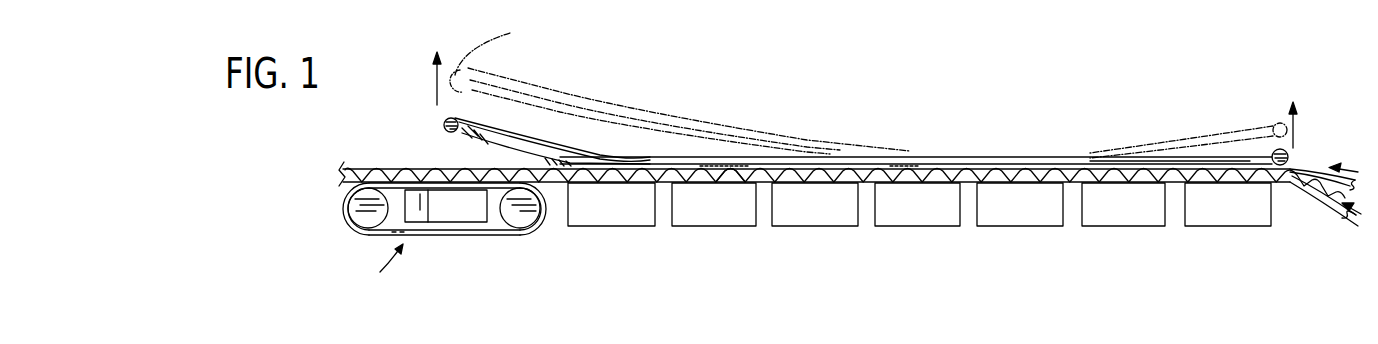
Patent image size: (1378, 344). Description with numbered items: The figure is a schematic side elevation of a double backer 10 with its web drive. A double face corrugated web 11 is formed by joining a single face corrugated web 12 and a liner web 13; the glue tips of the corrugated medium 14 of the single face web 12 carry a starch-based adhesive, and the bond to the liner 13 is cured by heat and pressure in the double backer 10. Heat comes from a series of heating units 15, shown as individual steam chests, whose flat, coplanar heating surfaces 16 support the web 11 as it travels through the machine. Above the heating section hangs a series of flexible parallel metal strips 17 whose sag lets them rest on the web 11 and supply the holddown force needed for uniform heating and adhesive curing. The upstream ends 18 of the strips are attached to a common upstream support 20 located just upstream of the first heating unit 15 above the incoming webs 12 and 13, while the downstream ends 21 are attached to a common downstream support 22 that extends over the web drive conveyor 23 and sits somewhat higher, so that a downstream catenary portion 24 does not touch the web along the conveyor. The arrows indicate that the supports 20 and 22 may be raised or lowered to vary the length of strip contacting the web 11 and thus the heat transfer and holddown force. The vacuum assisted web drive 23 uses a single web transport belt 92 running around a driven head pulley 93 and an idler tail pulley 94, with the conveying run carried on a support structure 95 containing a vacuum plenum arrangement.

The double backer 10 is at (1031, 110).
The double face corrugated web 11 is at (375, 175).
The single face corrugated web 12 is at (1300, 170).
The liner web 13 is at (437, 184).
The corrugated medium 14 is at (1314, 190).
The heating units 15 is at (598, 228).
The heating surfaces 16 is at (720, 182).
The flexible parallel metal strips 17 is at (862, 167).
The upstream ends 18 is at (1257, 157).
The upstream support 20 is at (1277, 122).
The downstream ends 21 is at (470, 140).
The downstream support 22 is at (445, 123).
The web drive conveyor 23 is at (381, 274).
The downstream catenary portion 24 is at (462, 150).
The web transport belt 92 is at (525, 220).
The driven head pulley 93 is at (372, 220).
The idler tail pulley 94 is at (523, 235).
The support structure 95 is at (458, 215).